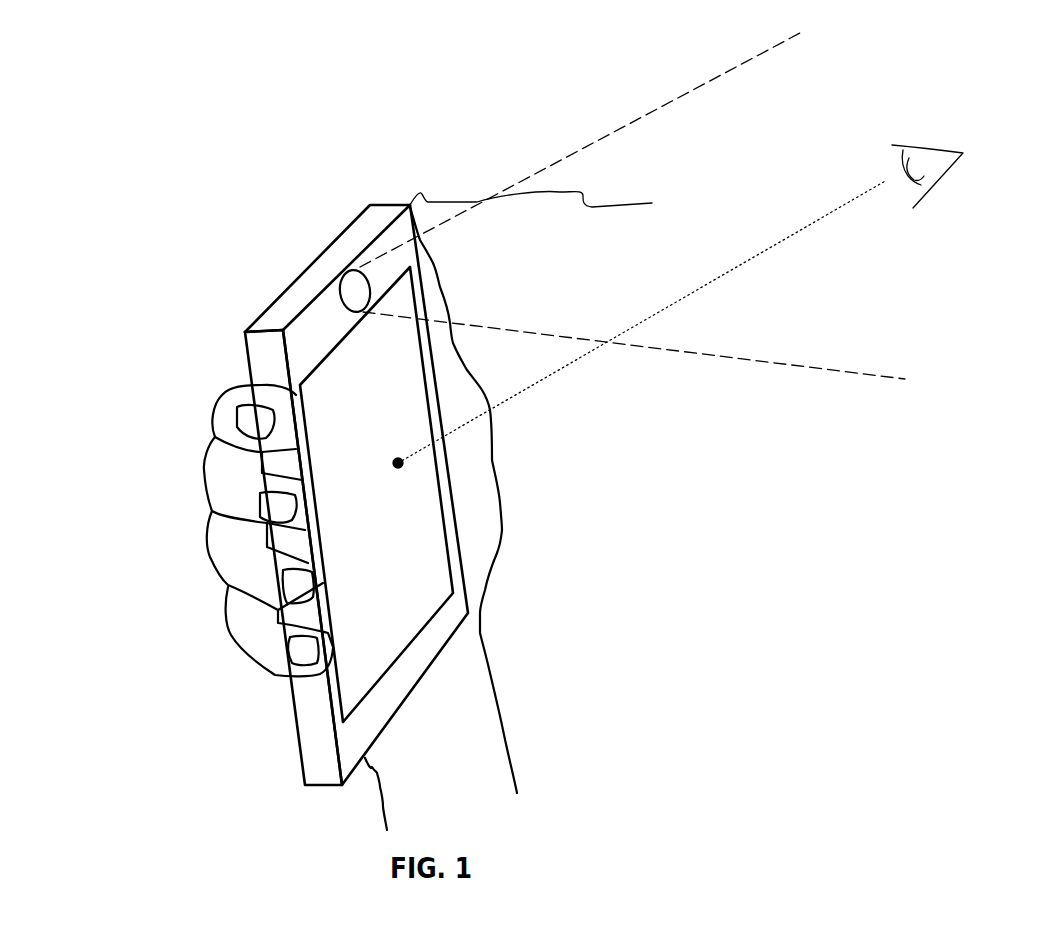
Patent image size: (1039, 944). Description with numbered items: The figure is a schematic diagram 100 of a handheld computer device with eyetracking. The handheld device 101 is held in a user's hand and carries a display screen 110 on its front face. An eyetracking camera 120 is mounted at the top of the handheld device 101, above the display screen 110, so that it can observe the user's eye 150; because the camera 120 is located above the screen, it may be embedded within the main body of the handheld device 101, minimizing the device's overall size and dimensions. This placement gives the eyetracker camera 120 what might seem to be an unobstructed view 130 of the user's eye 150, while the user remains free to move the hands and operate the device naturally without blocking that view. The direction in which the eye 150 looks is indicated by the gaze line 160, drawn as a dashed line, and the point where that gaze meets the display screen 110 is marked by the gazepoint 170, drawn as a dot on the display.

The schematic diagram 100 is at (303, 825).
The handheld device 101 is at (286, 291).
The display screen 110 is at (452, 572).
The eyetracking camera 120 is at (358, 268).
The unobstructed view 130 is at (529, 331).
The user's eye 150 is at (928, 186).
The gaze line 160 is at (543, 380).
The gazepoint 170 is at (398, 463).